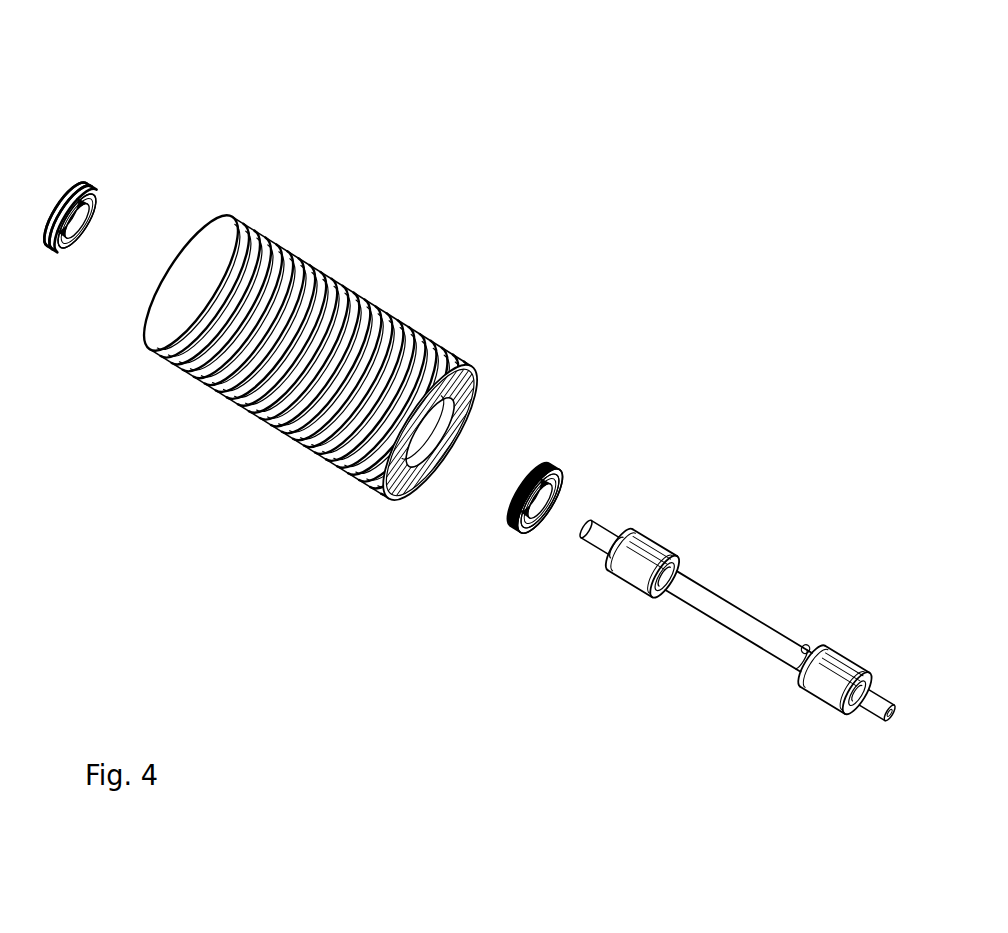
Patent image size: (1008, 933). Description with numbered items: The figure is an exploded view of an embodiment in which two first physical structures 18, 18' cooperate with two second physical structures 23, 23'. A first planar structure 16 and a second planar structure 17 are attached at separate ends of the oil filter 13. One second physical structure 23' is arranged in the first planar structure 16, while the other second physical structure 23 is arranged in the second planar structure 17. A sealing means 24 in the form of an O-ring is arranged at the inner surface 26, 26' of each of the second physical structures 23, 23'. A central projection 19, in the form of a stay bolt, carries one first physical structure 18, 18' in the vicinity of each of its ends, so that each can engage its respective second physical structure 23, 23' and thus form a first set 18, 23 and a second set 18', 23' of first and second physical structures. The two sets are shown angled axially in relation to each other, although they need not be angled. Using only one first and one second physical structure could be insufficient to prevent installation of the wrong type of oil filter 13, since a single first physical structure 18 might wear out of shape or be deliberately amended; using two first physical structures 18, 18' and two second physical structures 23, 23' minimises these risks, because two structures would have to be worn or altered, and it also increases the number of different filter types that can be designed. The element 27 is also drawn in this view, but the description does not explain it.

The oil filter 13 is at (370, 297).
The first planar structure 16 is at (84, 186).
The second planar structure 17 is at (555, 467).
The first physical structure 18 is at (801, 747).
The first physical structure 18' is at (687, 502).
The central projection 19 is at (717, 607).
The second physical structure 23 is at (548, 581).
The second physical structure 23' is at (172, 189).
The sealing means 24 is at (67, 250).
The inner surface 26 is at (588, 483).
The inner surface 26' is at (85, 287).
The retaining clip 27 is at (807, 650).